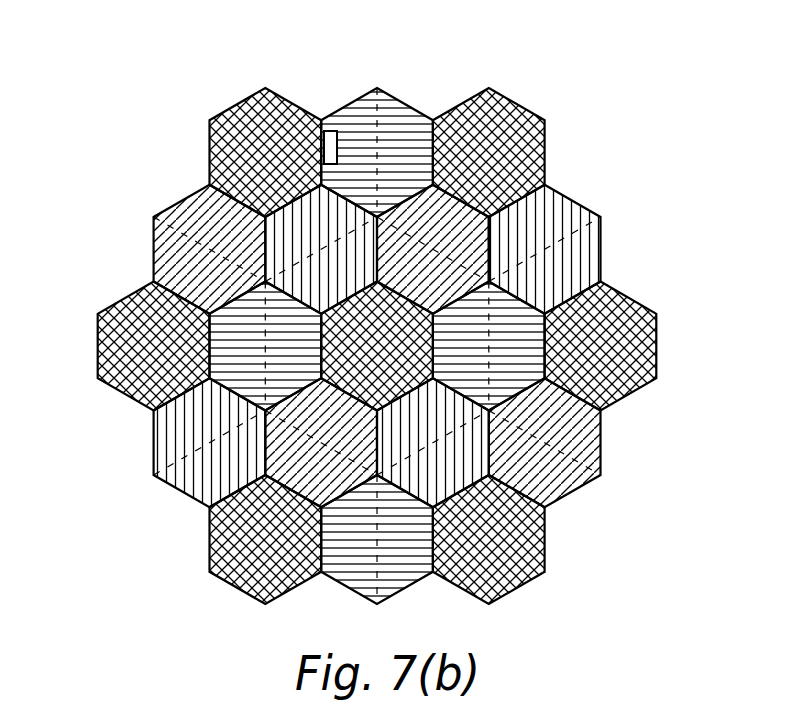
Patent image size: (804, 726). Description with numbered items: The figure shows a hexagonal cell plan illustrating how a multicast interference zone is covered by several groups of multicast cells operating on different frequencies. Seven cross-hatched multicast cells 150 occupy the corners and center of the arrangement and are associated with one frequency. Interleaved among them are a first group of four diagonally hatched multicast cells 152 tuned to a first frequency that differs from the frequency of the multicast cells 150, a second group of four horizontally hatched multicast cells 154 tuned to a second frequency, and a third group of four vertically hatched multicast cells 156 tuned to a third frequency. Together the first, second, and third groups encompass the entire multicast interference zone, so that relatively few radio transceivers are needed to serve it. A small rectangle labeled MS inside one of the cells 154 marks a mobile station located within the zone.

The multicast cells 150 is at (545, 590).
The first group of multicast cells 152 is at (587, 505).
The second group of multicast cells 154 is at (410, 607).
The third group of multicast cells 156 is at (572, 543).
The mobile station MS is at (329, 124).